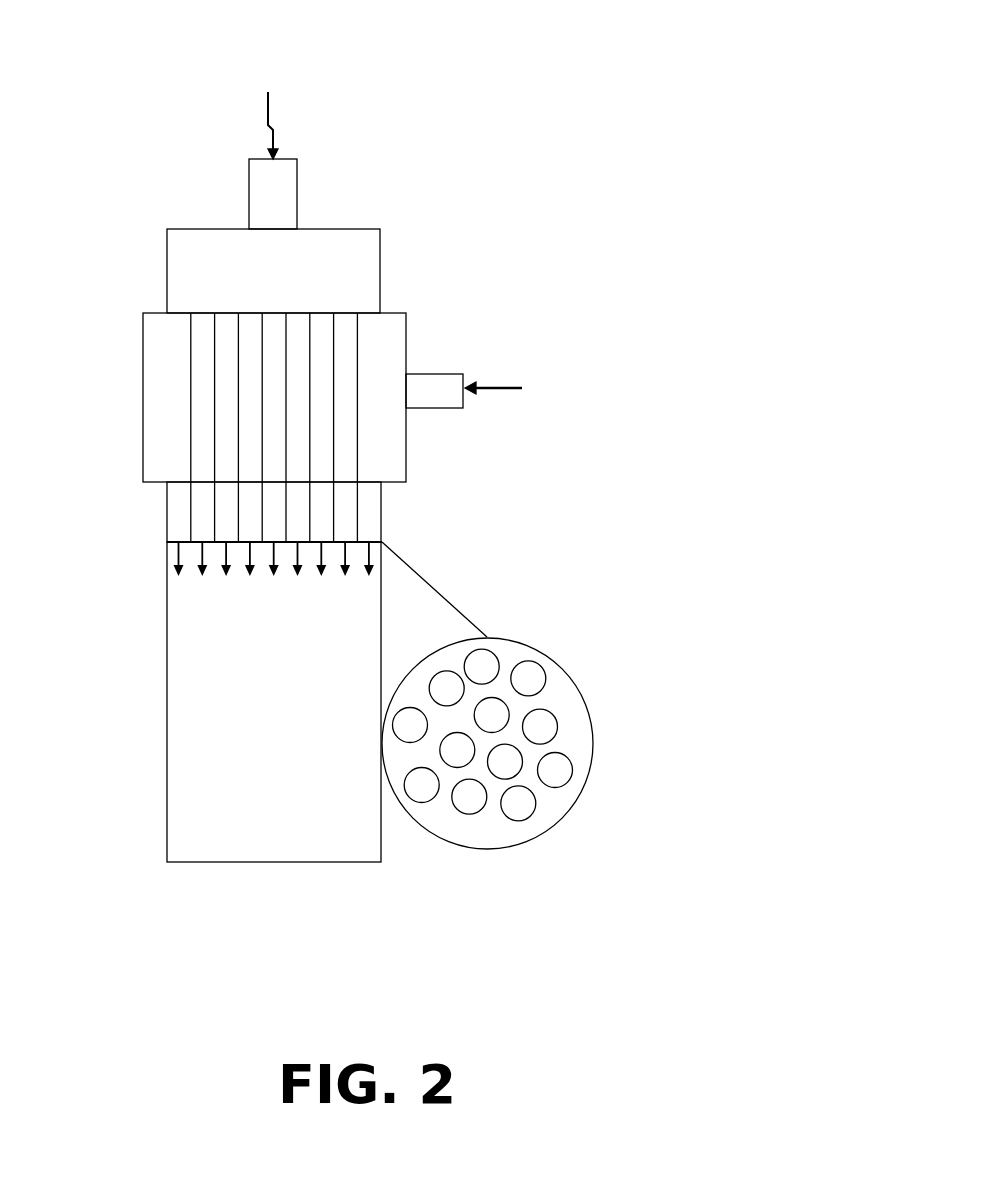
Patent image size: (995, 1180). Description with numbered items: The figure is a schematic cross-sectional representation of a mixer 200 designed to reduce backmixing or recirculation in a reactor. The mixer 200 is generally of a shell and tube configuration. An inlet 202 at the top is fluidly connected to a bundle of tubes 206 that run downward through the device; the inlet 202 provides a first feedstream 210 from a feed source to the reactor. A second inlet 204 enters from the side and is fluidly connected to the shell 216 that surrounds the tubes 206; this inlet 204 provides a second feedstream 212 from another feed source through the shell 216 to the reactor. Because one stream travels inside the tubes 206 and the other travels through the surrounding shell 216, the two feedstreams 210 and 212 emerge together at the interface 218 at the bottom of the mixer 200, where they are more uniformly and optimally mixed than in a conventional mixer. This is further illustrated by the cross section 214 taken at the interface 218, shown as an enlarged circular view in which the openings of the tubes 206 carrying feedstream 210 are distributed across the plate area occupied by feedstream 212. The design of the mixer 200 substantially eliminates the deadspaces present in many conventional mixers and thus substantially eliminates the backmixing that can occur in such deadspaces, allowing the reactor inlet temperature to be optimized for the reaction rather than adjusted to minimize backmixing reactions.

The mixer 200 is at (620, 159).
The inlet 202 is at (297, 178).
The inlet 204 is at (450, 397).
The tubes 206 is at (298, 320).
The feedstream 210 is at (198, 544).
The feedstream 212 is at (382, 542).
The cross section 214 is at (573, 677).
The shell 216 is at (393, 337).
The interface 218 is at (167, 542).